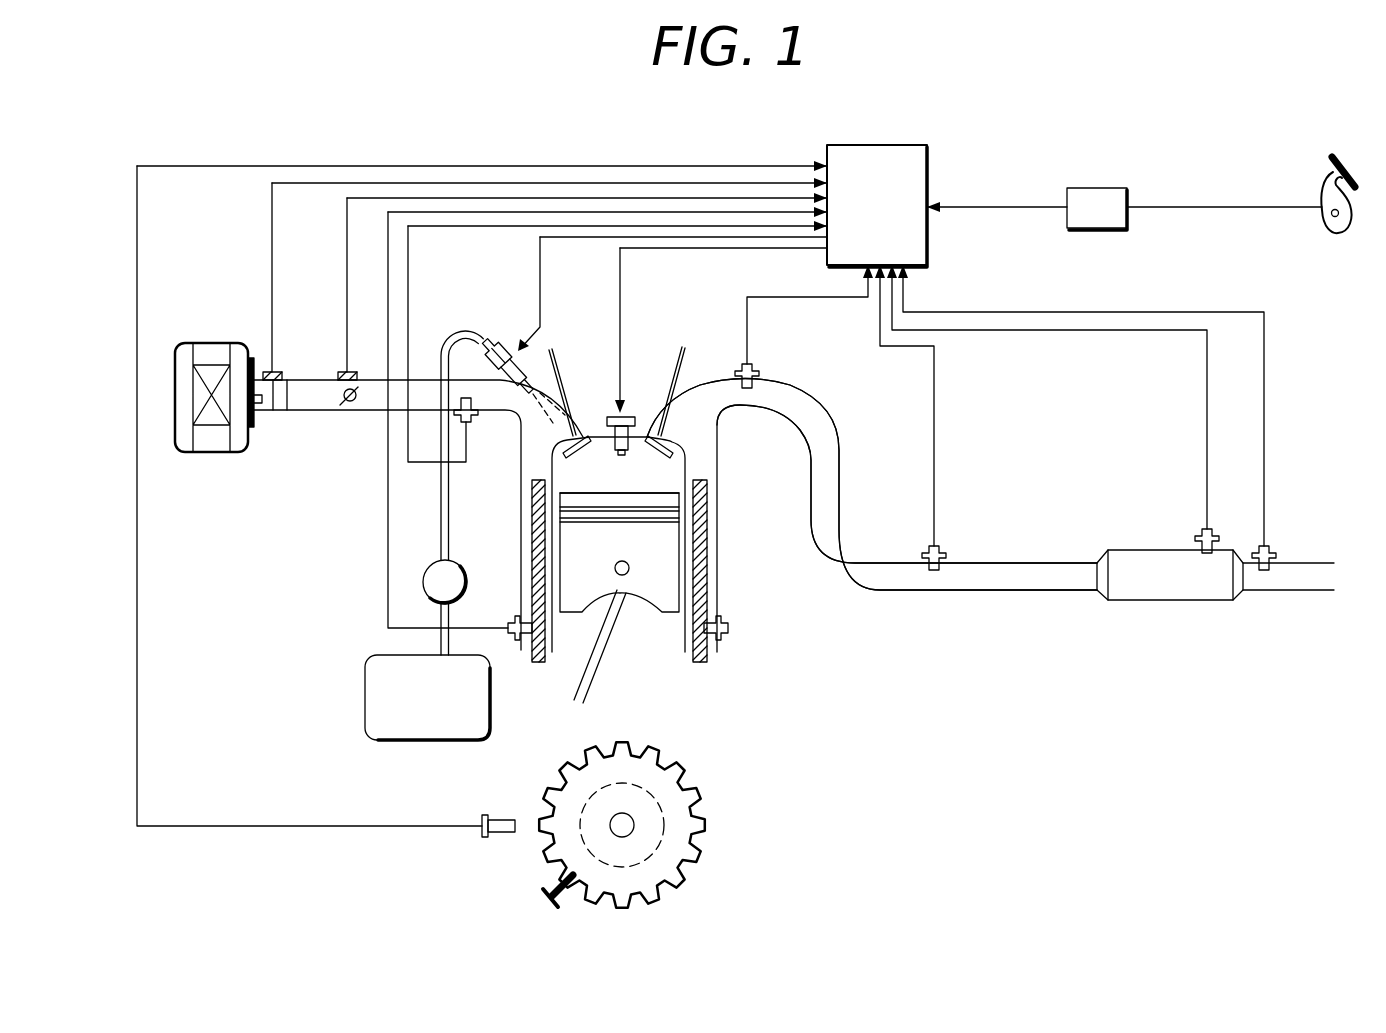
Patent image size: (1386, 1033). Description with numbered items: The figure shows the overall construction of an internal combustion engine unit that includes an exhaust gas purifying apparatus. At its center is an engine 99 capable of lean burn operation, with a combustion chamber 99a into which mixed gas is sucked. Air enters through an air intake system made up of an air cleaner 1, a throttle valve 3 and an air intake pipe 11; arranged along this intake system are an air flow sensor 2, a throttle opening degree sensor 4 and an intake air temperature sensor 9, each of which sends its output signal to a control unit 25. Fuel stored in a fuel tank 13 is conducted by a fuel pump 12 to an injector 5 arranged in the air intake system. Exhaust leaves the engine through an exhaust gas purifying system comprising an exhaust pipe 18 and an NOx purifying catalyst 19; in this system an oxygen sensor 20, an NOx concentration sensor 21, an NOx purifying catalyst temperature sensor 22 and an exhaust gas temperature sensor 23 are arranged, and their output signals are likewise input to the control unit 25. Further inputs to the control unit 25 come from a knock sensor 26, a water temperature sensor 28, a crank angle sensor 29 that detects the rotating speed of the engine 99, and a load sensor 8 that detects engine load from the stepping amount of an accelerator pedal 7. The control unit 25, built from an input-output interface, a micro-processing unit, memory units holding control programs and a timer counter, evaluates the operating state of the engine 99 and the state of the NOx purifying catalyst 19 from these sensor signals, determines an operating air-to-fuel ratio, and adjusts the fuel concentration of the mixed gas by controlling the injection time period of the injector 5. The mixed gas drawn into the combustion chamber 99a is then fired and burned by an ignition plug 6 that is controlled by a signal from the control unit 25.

The air cleaner 1 is at (218, 455).
The air flow sensor 2 is at (277, 372).
The throttle valve 3 is at (350, 407).
The throttle opening degree sensor 4 is at (352, 372).
The injector 5 is at (505, 345).
The ignition plug 6 is at (605, 402).
The accelerator pedal 7 is at (1322, 198).
The load sensor 8 is at (1095, 192).
The intake air temperature sensor 9 is at (470, 424).
The intake pipe 11 is at (513, 410).
The fuel pump 12 is at (428, 567).
The fuel tank 13 is at (408, 725).
The exhaust pipe 18 is at (792, 430).
The NOx purifying catalyst 19 is at (1153, 591).
The oxygen sensor 20 is at (740, 365).
The NOx concentration sensor 21 is at (918, 548).
The NOx purifying catalyst temperature sensor 22 is at (1203, 535).
The exhaust gas temperature sensor 23 is at (1280, 553).
The control unit (ECU) 25 is at (868, 148).
The knock sensor 26 is at (727, 634).
The water temperature sensor 28 is at (521, 645).
The crank angle sensor 29 is at (498, 845).
The engine 99 is at (717, 503).
The combustion chamber 99a is at (675, 491).